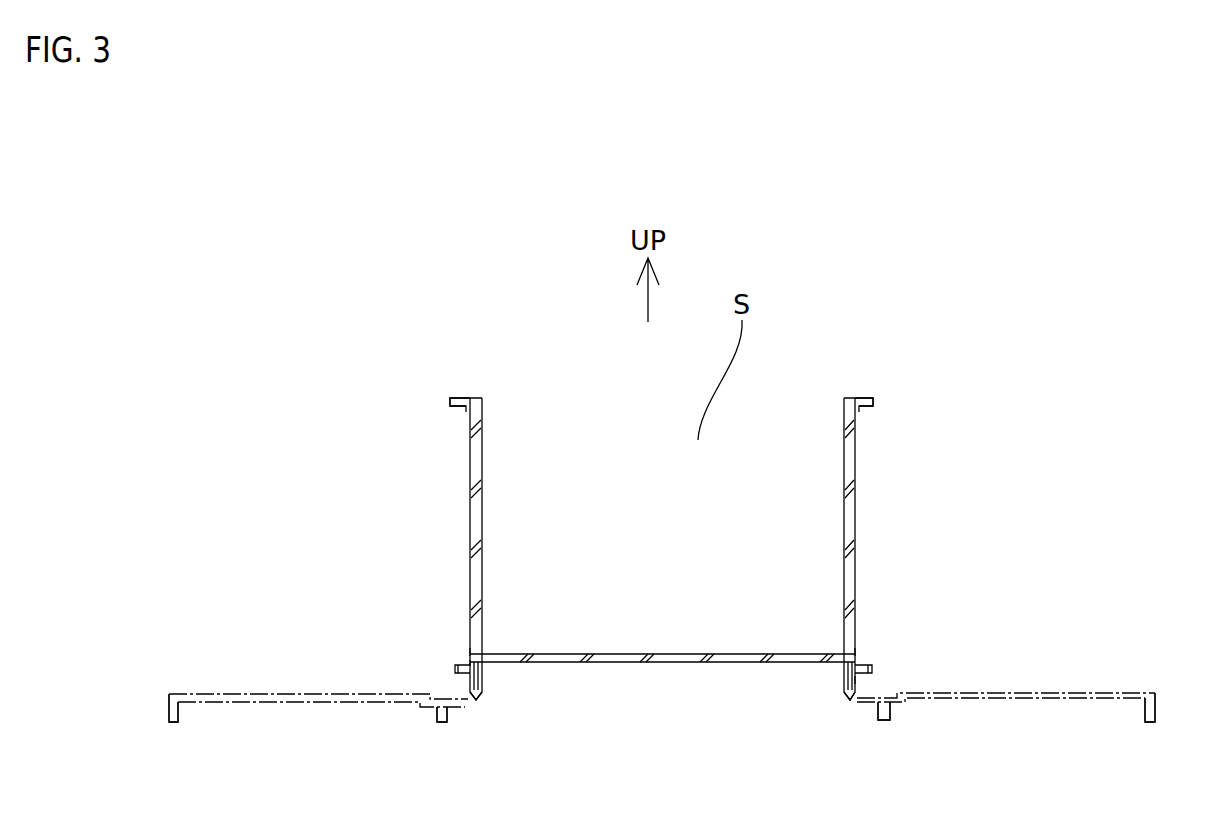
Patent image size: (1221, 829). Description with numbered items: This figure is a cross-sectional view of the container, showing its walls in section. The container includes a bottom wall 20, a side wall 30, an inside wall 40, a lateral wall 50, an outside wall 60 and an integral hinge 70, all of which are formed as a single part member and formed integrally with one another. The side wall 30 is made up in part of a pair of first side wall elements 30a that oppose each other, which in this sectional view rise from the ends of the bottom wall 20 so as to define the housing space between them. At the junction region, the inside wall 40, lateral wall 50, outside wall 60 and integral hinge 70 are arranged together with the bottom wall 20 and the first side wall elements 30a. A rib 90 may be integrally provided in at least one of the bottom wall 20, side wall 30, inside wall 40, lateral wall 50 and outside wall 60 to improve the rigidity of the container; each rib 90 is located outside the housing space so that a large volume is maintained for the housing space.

The bottom wall 20 is at (688, 663).
The side wall 30 is at (295, 703).
The first side wall element 30a is at (476, 497).
The inside wall 40 is at (483, 678).
The lateral wall 50 is at (466, 650).
The outside wall 60 is at (466, 660).
The integral hinge 70 is at (478, 700).
The rib 90 is at (458, 668).